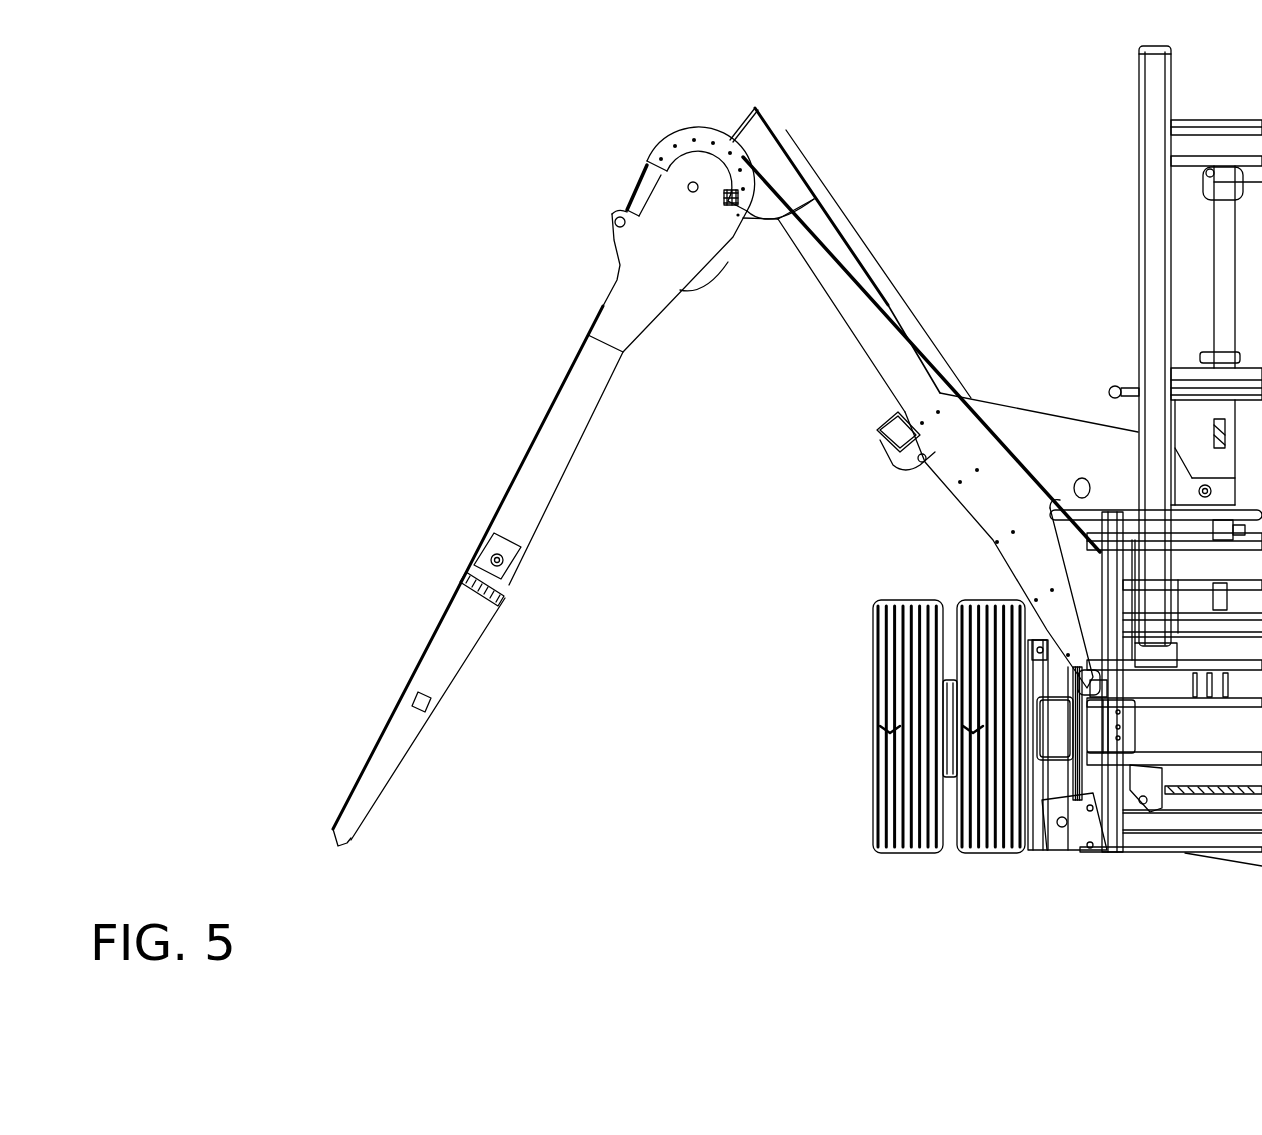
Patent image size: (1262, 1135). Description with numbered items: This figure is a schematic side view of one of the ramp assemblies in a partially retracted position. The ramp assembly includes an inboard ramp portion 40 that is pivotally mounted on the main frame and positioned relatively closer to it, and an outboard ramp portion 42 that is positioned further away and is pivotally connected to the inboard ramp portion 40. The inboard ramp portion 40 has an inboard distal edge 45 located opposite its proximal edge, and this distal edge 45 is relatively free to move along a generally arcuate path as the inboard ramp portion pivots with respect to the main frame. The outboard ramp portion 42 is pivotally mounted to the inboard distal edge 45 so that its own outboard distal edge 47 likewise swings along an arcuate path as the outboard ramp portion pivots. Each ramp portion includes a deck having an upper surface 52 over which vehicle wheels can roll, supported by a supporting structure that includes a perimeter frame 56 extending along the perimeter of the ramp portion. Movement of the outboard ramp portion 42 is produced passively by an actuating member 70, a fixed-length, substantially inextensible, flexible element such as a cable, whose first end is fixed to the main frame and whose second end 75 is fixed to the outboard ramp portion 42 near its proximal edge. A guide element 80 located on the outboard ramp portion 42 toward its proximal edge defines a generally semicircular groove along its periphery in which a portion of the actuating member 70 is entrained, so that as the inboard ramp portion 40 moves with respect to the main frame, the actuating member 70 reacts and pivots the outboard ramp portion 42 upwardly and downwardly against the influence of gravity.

The inboard ramp portion 40 is at (918, 492).
The outboard ramp portion 42 is at (552, 540).
The inboard distal edge 45 is at (757, 107).
The outboard distal edge 47 is at (331, 828).
The upper surface 52 is at (548, 412).
The perimeter frame 56 is at (553, 448).
The actuating member 70 is at (638, 180).
The second end 75 is at (613, 222).
The guide element 80 is at (683, 140).